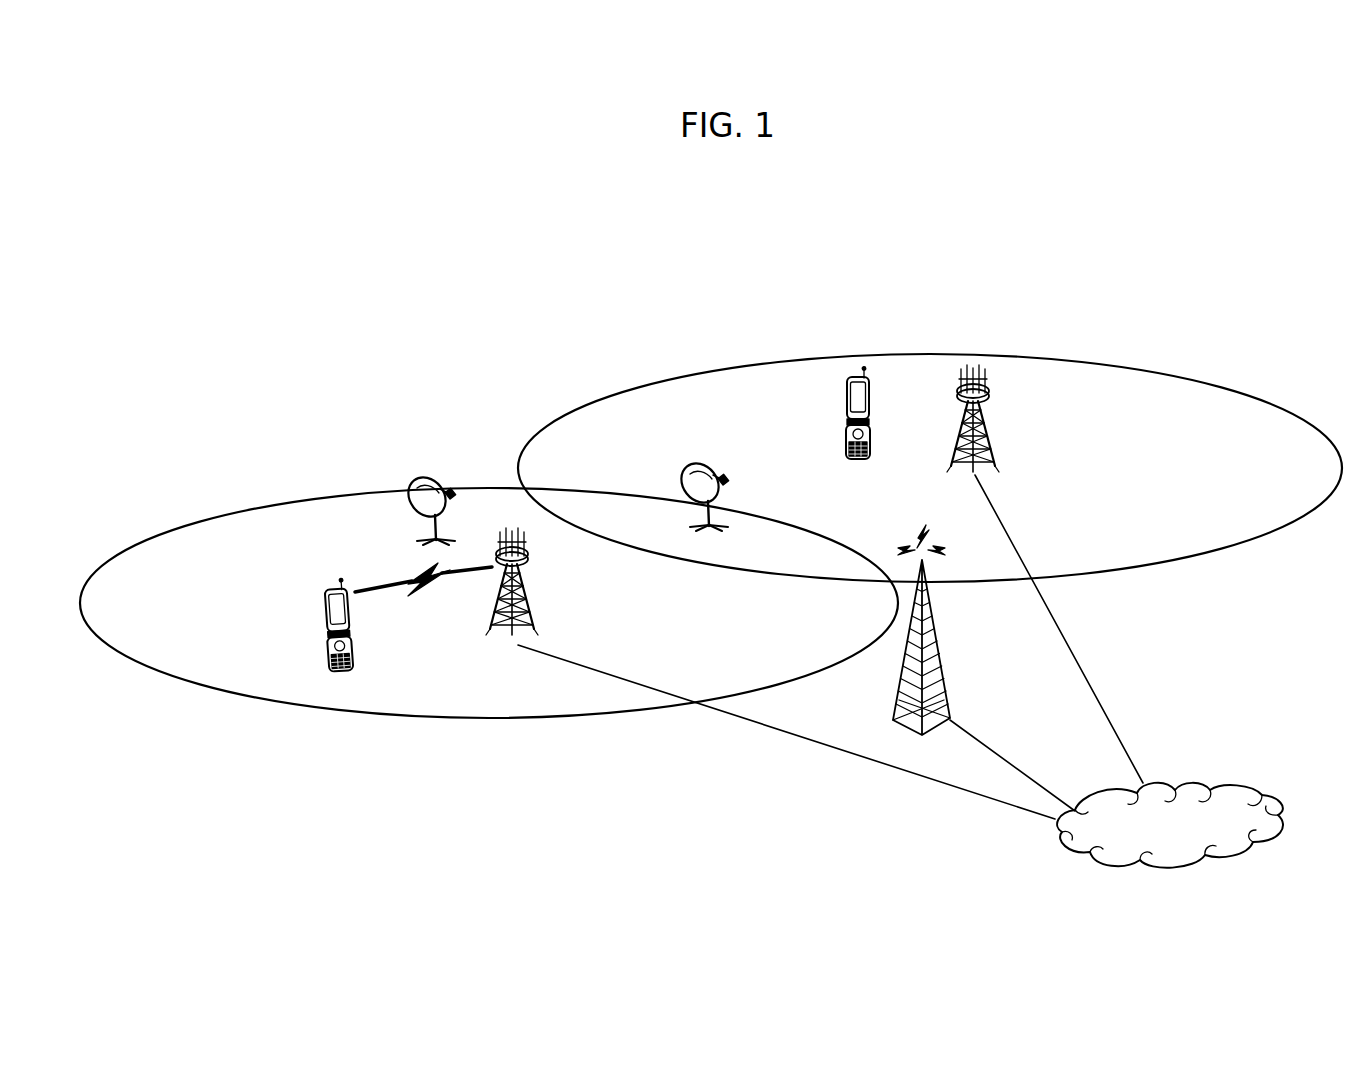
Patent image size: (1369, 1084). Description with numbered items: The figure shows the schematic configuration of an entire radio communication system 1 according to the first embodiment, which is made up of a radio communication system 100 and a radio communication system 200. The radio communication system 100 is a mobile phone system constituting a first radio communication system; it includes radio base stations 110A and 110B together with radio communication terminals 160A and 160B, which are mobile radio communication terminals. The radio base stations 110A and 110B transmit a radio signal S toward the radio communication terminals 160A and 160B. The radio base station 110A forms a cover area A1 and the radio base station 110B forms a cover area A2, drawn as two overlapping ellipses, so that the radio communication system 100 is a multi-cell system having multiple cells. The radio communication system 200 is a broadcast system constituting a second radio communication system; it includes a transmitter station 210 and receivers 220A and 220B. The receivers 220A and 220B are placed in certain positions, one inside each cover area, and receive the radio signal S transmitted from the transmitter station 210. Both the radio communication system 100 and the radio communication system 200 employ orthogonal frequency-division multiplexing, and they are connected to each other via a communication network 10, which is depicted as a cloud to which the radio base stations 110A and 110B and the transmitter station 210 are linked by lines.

The radio communication system 1 is at (1228, 260).
The communication network 10 is at (1204, 782).
The radio communication system 100 is at (497, 653).
The radio base station 110A is at (528, 598).
The radio base station 110B is at (990, 423).
The radio communication terminal 160A is at (350, 620).
The radio communication terminal 160B is at (856, 460).
The radio communication system 200 is at (743, 552).
The transmitter station 210 is at (946, 668).
The receiver 220A is at (437, 487).
The receiver 220B is at (712, 472).
The cover area A1 is at (236, 507).
The cover area A2 is at (1196, 378).
The radio signal S is at (388, 582).